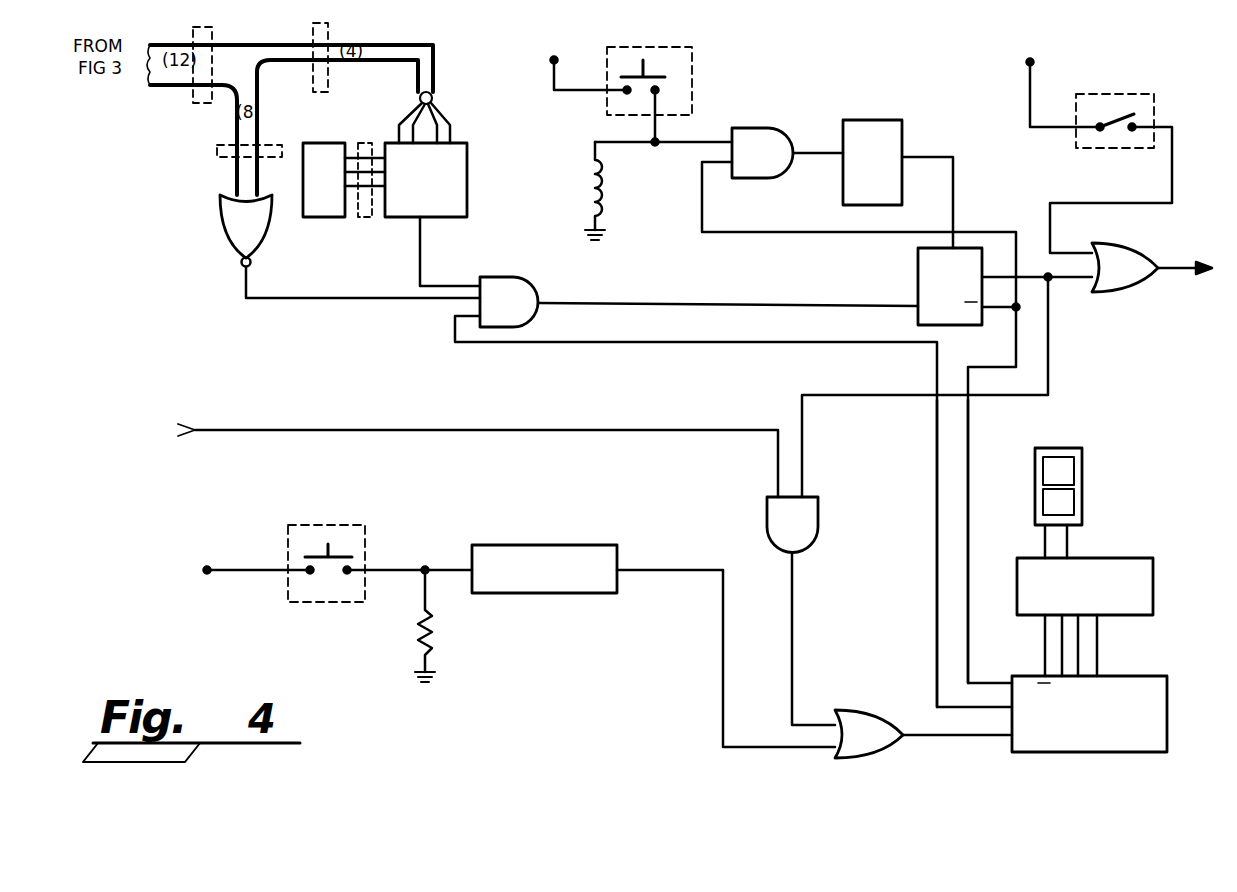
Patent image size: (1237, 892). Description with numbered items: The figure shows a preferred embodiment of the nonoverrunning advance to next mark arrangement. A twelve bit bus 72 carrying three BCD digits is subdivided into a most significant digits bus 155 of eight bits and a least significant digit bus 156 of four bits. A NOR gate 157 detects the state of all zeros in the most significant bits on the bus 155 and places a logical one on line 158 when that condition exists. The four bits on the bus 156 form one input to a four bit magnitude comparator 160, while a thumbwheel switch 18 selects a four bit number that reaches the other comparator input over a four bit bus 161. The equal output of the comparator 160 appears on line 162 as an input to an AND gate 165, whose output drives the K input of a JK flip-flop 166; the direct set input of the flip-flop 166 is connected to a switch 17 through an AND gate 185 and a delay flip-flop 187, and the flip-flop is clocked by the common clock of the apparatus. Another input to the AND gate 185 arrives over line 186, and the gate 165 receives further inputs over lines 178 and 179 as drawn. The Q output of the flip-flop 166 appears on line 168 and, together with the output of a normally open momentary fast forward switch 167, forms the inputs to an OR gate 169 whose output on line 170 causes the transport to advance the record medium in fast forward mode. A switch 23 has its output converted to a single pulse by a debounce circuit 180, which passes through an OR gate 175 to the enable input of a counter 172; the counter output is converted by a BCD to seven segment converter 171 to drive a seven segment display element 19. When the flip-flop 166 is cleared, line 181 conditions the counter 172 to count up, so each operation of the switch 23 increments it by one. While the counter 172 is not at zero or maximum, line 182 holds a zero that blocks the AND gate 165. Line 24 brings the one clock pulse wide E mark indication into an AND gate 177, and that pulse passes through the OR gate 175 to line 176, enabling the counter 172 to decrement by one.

The switch 17 is at (692, 86).
The thumbwheel switch 18 is at (318, 217).
The seven segment display element 19 is at (1082, 480).
The switch 23 is at (345, 525).
The line 24 is at (494, 421).
The twelve bit bus 72 is at (193, 98).
The most significant digits bus 155 is at (215, 147).
The least significant digit bus 156 is at (318, 95).
The NOR gate 157 is at (220, 230).
The line 158 is at (347, 298).
The four bit magnitude comparator 160 is at (467, 178).
The four bit bus 161 is at (365, 220).
The line 162 is at (420, 248).
The AND gate 165 is at (530, 278).
The JK flip-flop 166 is at (918, 268).
The fast forward switch 167 is at (1150, 94).
The line 168 is at (1067, 280).
The OR gate 169 is at (1127, 292).
The line 170 is at (1165, 263).
The BCD to seven segment converter 171 is at (1153, 583).
The counter 172 is at (1167, 690).
The OR gate 175 is at (868, 710).
The line 176 is at (945, 735).
The AND gate 177 is at (818, 515).
The line 178 is at (850, 393).
The line 179 is at (700, 570).
The debounce circuit 180 is at (543, 545).
The line 181 is at (968, 448).
The line 182 is at (937, 448).
The AND gate 185 is at (752, 128).
The line 186 is at (780, 232).
The delay flip-flop 187 is at (885, 120).